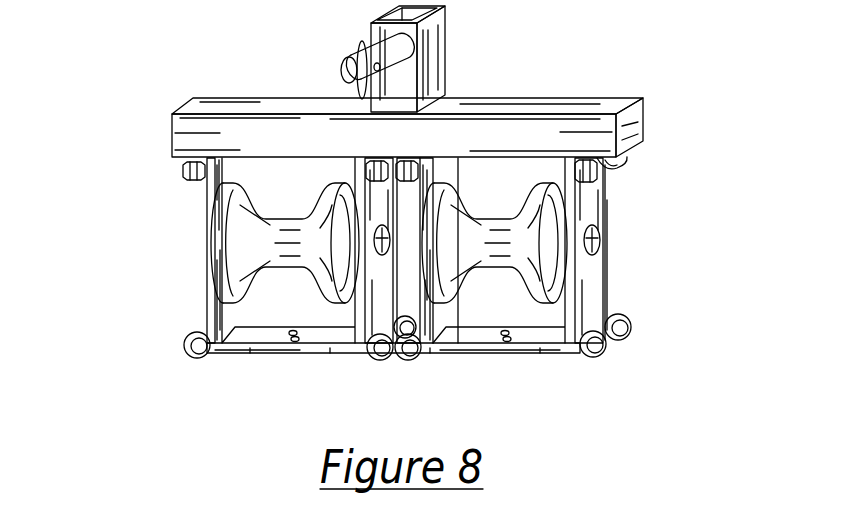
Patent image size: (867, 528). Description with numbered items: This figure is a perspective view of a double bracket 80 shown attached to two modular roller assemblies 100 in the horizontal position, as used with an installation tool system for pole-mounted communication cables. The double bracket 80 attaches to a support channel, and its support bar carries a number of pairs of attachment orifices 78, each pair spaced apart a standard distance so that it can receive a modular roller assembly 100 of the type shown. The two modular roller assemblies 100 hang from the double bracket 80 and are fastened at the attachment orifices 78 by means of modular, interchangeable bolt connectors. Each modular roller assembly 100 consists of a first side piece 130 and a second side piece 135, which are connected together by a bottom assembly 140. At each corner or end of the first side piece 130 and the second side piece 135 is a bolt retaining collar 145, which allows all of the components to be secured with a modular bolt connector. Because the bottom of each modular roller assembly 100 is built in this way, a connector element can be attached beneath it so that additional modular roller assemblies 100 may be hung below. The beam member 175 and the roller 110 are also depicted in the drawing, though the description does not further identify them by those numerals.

The double bracket 80 is at (528, 56).
The cross beam 175 is at (488, 108).
The modular roller assembly 100 is at (395, 268).
The first side piece 130 is at (217, 187).
The second side piece 135 is at (360, 340).
The hourglass roller 110 is at (250, 247).
The bottom assembly 140 is at (507, 352).
The bolt retaining collar 145 is at (631, 325).
The attachment orifice 78 is at (183, 166).